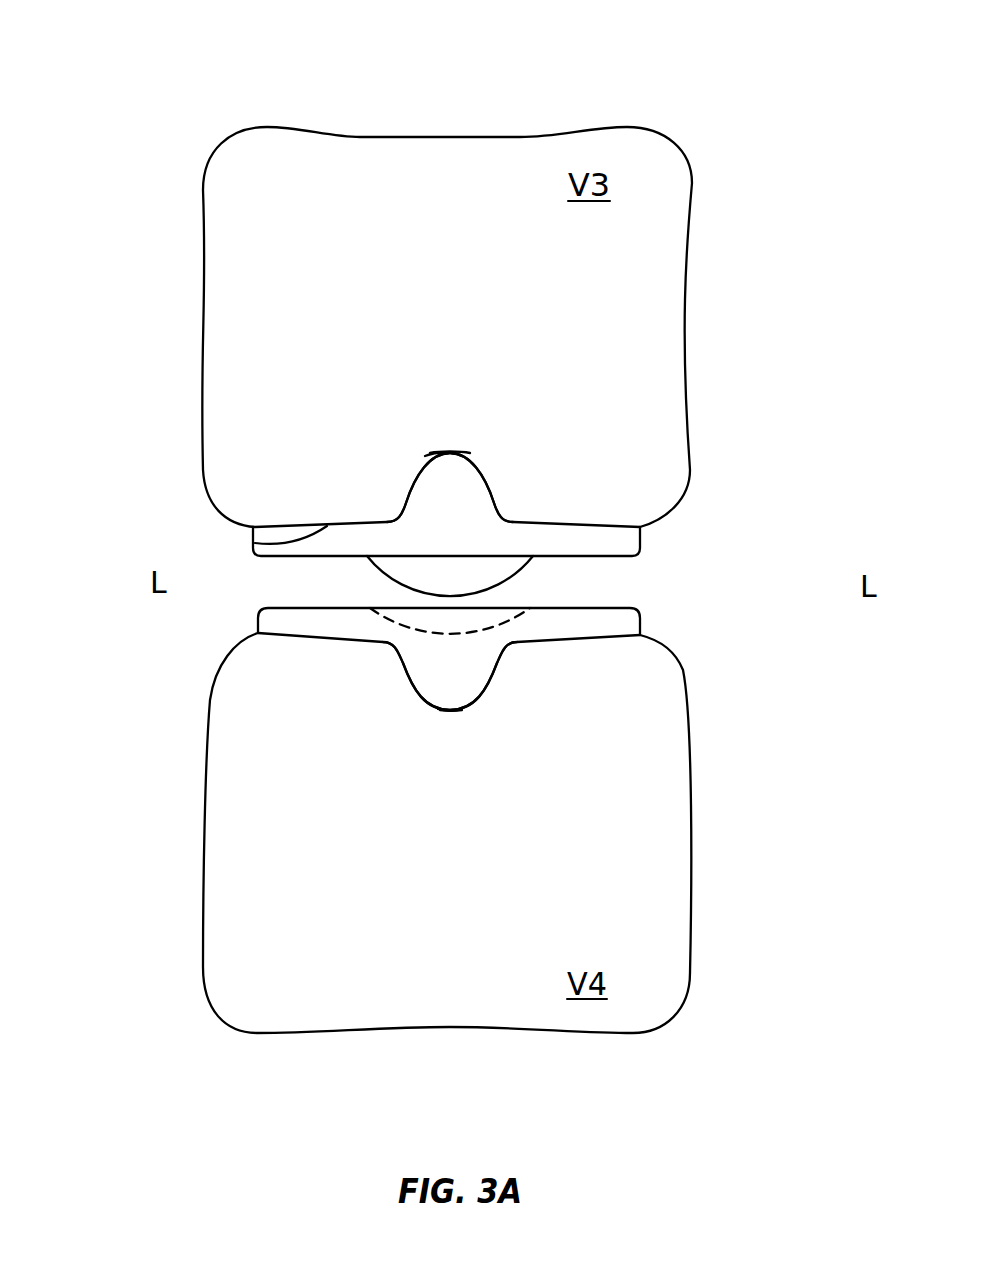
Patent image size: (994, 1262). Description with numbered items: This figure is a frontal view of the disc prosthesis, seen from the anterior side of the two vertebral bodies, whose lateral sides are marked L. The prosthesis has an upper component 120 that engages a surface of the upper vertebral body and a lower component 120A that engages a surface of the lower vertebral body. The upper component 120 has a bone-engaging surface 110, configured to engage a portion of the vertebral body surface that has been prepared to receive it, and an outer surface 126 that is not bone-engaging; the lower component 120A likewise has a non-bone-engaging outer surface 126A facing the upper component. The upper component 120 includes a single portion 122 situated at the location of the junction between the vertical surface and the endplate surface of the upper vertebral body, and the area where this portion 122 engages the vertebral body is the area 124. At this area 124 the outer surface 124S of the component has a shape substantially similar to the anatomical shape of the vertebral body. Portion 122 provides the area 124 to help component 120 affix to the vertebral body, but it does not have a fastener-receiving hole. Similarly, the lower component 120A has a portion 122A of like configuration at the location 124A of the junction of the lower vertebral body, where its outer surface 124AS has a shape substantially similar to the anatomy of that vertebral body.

The bone-engaging surface 110 is at (253, 540).
The component 120 is at (668, 537).
The component 120A is at (668, 625).
The portion 122 is at (472, 475).
The portion 122A is at (470, 685).
The area 124 is at (463, 442).
The outer surface 124S is at (447, 440).
The area 124A is at (470, 722).
The outer surface 124AS is at (452, 722).
The outer surface 126 is at (600, 557).
The outer surface 126A is at (593, 607).